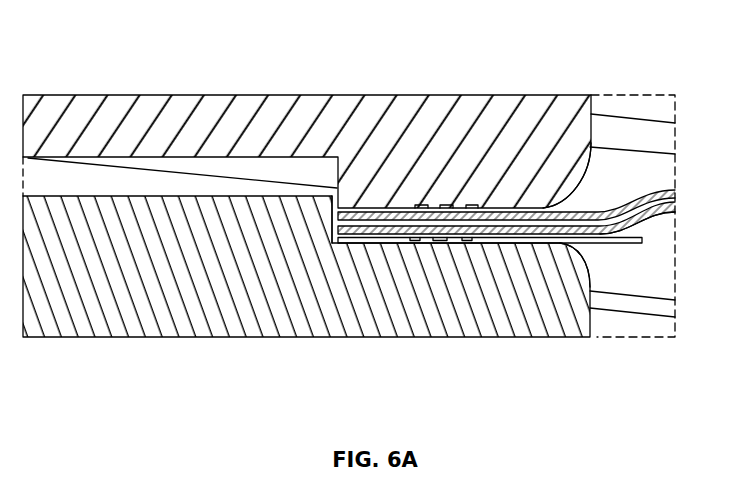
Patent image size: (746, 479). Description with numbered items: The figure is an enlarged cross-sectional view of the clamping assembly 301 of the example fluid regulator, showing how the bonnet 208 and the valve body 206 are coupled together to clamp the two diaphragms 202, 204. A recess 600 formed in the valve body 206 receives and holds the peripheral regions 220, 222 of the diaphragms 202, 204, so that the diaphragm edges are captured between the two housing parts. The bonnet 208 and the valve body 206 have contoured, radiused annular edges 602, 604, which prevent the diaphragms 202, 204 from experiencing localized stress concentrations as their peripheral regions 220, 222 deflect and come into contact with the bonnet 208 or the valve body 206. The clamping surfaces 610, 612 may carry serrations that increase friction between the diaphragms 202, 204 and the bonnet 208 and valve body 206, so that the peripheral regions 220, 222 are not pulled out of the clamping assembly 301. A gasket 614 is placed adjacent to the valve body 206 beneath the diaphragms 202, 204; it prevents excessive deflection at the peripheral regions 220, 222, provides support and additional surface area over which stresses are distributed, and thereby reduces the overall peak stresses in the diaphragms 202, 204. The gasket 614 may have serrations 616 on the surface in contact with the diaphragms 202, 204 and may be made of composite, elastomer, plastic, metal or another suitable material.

The bonnet 208 is at (88, 130).
The valve body 206 is at (98, 258).
The peripheral region of diaphragm 220 is at (377, 218).
The peripheral region of diaphragm 222 is at (375, 234).
The surface 612 is at (418, 240).
The surface 610 is at (468, 207).
The serrations 616 is at (433, 243).
The gasket 614 is at (468, 243).
The contoured annular edge 602 is at (572, 190).
The contoured annular edge 604 is at (563, 247).
The recess 600 is at (333, 245).
The diaphragm 202 is at (620, 206).
The diaphragm 204 is at (650, 216).
The clamping assembly 301 is at (585, 89).